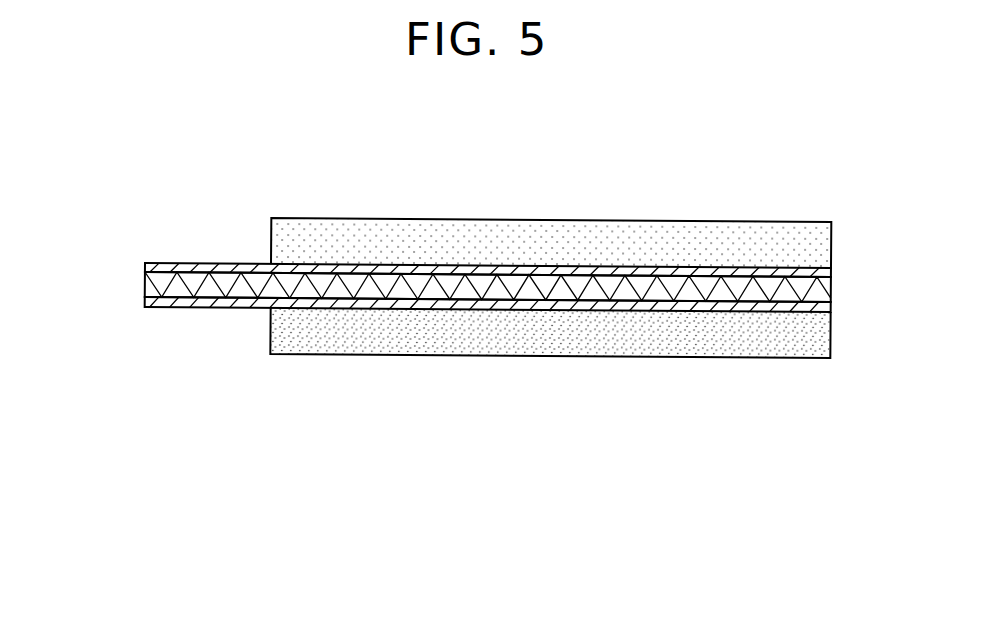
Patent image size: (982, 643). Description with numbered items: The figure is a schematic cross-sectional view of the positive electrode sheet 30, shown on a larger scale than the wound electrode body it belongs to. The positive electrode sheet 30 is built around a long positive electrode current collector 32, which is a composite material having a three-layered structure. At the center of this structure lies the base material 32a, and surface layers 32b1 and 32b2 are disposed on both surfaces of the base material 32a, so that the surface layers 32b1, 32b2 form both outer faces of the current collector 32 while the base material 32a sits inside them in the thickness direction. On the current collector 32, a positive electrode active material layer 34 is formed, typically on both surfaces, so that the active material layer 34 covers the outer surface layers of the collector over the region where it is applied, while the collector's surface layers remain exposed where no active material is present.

The positive electrode sheet 30 is at (617, 204).
The positive electrode current collector 32 is at (219, 256).
The base material 32a is at (152, 283).
The surface layer 32b1 is at (160, 268).
The surface layer 32b2 is at (160, 303).
The positive electrode active material layer 34 is at (756, 230).